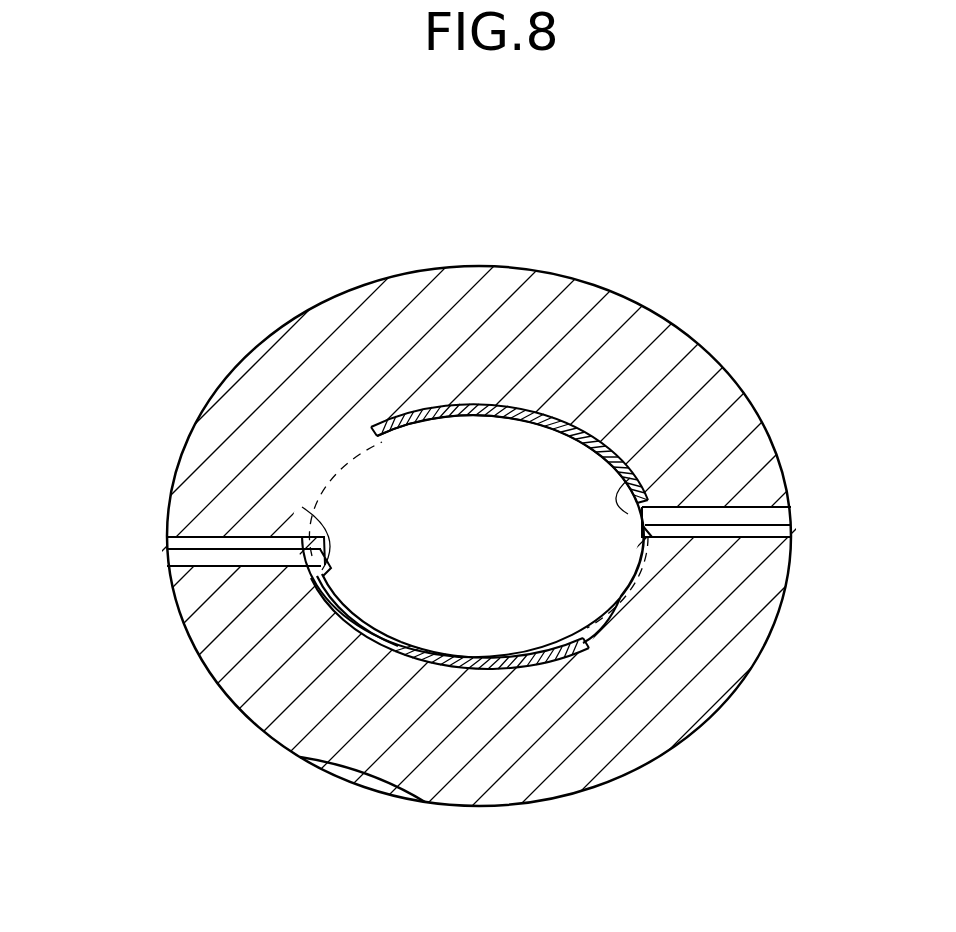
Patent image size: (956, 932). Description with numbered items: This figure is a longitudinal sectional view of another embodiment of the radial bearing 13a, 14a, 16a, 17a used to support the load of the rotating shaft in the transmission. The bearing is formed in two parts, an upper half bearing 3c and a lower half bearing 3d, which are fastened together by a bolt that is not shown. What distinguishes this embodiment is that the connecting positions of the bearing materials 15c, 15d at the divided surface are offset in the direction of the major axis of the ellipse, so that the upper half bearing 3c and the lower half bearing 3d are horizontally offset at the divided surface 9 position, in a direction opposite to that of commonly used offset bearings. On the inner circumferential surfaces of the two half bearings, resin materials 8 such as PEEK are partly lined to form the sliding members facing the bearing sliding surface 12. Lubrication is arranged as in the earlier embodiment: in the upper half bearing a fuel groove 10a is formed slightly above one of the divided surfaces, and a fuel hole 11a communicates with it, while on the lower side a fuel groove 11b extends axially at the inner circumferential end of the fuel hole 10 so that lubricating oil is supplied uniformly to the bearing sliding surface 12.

The upper half bearing 3c is at (556, 260).
The lower half bearing 3d is at (518, 822).
The resin material 8 is at (377, 640).
The divided surface 9 is at (208, 537).
The slit 10 is at (182, 556).
The fuel groove 10a is at (752, 515).
The fuel hole 11a is at (623, 497).
The fuel groove 11b is at (308, 512).
The bearing sliding surface 12 is at (483, 657).
The radial bearing 13a is at (328, 835).
The radial bearing 14a is at (328, 835).
The bearing material 15c is at (425, 307).
The bearing material 15d is at (663, 720).
The radial bearing 16a is at (328, 835).
The radial bearing 17a is at (385, 810).